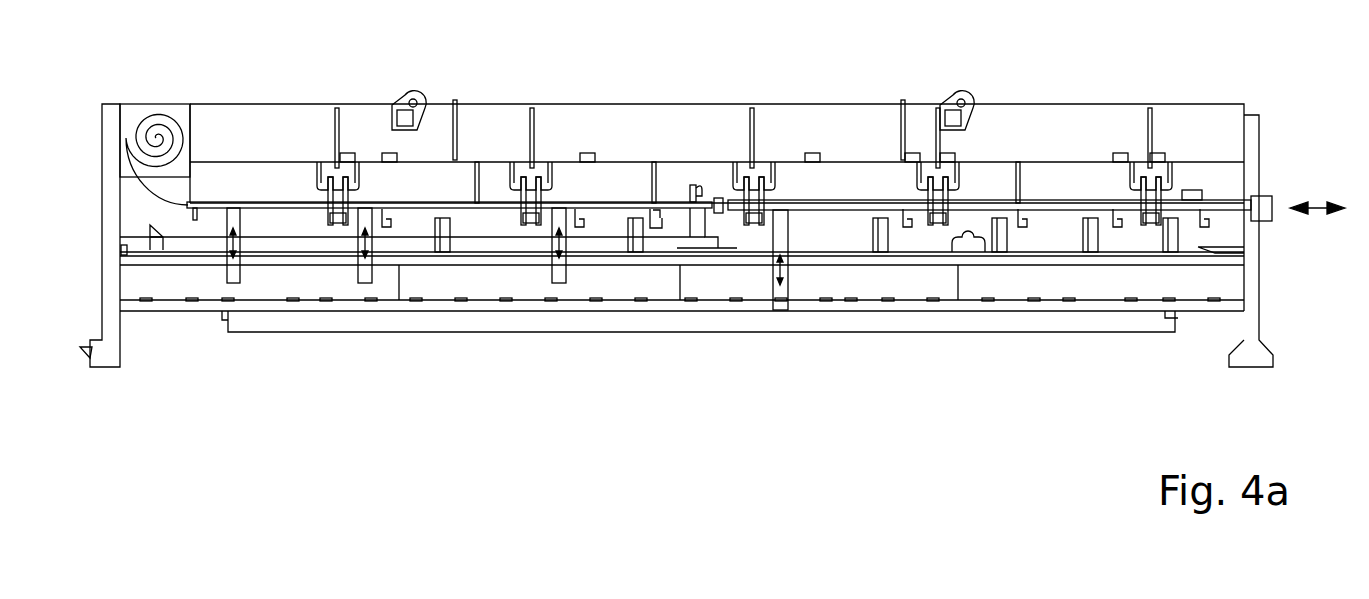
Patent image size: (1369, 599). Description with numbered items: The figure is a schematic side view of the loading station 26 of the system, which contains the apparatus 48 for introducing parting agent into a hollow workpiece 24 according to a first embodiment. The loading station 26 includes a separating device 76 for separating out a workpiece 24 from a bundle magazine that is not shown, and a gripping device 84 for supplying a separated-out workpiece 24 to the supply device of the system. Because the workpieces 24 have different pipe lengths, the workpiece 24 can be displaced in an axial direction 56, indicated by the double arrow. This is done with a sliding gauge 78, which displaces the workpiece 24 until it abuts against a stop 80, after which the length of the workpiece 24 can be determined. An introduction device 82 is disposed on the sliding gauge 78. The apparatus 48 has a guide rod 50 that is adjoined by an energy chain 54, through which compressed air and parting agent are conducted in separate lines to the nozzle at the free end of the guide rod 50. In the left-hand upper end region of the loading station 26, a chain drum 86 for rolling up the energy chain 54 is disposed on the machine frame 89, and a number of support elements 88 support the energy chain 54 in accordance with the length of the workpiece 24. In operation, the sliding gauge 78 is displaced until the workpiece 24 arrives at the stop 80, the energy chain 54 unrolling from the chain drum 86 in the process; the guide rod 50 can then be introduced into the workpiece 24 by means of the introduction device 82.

The hollow workpiece 24 is at (1045, 202).
The loading station 26 is at (108, 294).
The apparatus for introducing parting agent 48 is at (674, 220).
The guide rod 50 is at (675, 202).
The energy chain 54 is at (500, 200).
The axial direction 56 is at (1318, 208).
The separating device 76 is at (935, 322).
The sliding gauge 78 is at (693, 215).
The stop 80 is at (1272, 212).
The introduction device 82 is at (692, 186).
The gripping device 84 is at (858, 120).
The chain drum 86 is at (157, 117).
The support elements 88 is at (232, 275).
The machine frame 89 is at (108, 182).